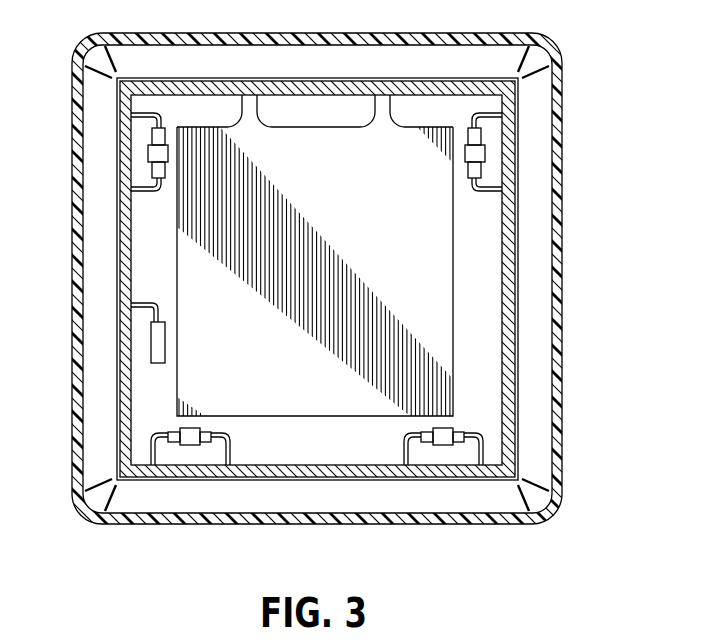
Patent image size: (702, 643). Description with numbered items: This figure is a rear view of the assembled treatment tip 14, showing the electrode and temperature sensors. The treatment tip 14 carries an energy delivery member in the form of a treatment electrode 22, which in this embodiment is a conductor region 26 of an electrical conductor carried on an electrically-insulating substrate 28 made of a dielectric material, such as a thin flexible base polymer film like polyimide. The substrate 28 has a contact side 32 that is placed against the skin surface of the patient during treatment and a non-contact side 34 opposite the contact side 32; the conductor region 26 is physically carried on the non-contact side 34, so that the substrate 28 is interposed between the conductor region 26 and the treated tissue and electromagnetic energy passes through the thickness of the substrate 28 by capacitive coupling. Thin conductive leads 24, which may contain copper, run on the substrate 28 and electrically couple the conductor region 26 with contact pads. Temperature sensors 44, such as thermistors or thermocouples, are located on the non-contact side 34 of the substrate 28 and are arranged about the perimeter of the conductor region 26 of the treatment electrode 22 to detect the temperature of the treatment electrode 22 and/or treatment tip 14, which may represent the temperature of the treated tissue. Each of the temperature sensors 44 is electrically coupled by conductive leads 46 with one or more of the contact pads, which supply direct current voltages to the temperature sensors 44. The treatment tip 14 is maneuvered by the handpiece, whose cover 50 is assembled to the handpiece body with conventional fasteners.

The treatment tip 14 is at (567, 262).
The treatment electrode 22 is at (170, 383).
The conductive leads 24 is at (258, 103).
The conductor region 26 is at (306, 405).
The substrate 28 is at (488, 353).
The contact side 32 is at (204, 113).
The non-contact side 34 is at (327, 113).
The temperature sensors 44 is at (155, 152).
The conductive leads 46 is at (155, 198).
The cover 50 is at (508, 109).